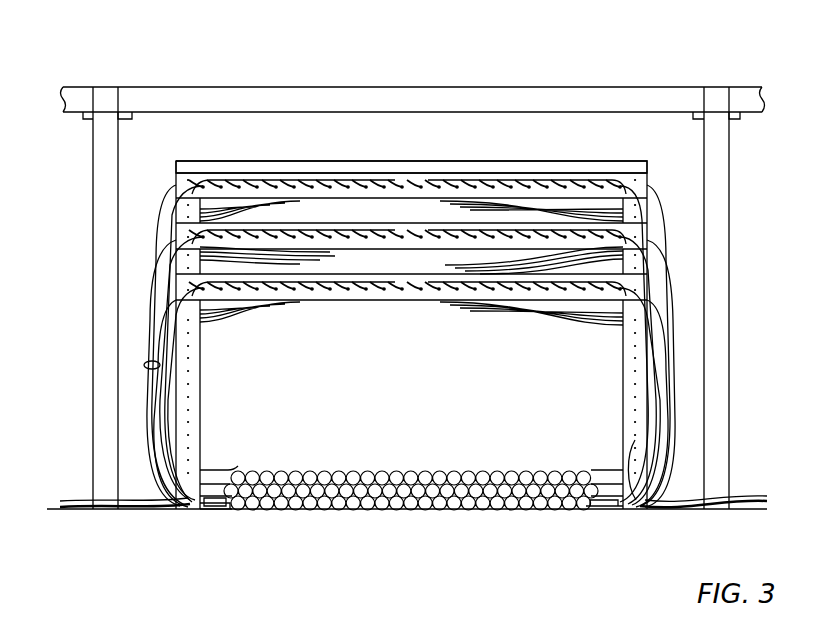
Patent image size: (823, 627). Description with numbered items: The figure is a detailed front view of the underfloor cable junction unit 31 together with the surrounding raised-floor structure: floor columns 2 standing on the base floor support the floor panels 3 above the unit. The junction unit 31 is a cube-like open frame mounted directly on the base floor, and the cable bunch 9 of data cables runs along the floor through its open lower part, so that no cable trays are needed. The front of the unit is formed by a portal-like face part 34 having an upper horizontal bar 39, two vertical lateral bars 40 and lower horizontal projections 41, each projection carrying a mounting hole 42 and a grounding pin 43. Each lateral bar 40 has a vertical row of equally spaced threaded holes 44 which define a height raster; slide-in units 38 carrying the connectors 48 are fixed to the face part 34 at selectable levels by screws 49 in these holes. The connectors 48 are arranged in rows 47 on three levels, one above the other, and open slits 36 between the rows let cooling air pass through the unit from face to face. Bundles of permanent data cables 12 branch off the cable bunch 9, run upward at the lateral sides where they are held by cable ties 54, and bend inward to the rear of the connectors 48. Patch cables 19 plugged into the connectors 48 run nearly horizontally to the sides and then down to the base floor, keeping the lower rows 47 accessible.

The floor column 2 is at (102, 427).
The floor panel 3 is at (752, 101).
The cable bunch 9 is at (447, 505).
The permanent data cable 12 is at (675, 348).
The patch cable 19 is at (647, 497).
The underfloor cable junction unit 31 is at (213, 512).
The face part 34 is at (192, 397).
The open slit 36 is at (424, 221).
The slide-in unit 38 is at (393, 178).
The upper horizontal bar 39 is at (458, 168).
The vertical lateral bar 40 is at (640, 450).
The horizontal projection 41 is at (600, 506).
The mounting hole 42 is at (230, 505).
The grounding pin 43 is at (198, 508).
The threaded hole 44 is at (633, 402).
The connector row 47 is at (145, 178).
The connector 48 is at (420, 185).
The screw 49 is at (675, 285).
The cable tie 54 is at (153, 365).